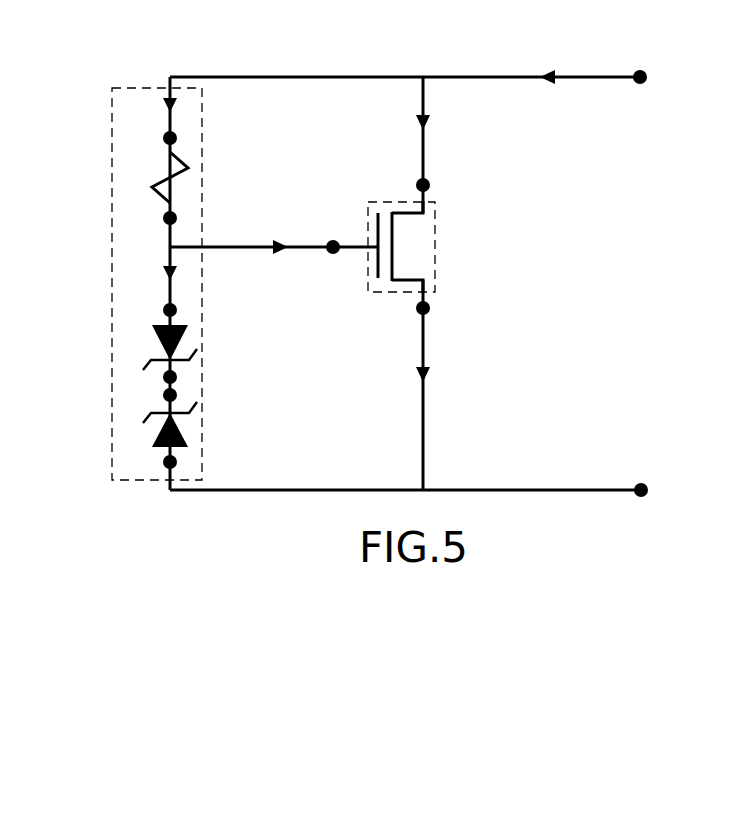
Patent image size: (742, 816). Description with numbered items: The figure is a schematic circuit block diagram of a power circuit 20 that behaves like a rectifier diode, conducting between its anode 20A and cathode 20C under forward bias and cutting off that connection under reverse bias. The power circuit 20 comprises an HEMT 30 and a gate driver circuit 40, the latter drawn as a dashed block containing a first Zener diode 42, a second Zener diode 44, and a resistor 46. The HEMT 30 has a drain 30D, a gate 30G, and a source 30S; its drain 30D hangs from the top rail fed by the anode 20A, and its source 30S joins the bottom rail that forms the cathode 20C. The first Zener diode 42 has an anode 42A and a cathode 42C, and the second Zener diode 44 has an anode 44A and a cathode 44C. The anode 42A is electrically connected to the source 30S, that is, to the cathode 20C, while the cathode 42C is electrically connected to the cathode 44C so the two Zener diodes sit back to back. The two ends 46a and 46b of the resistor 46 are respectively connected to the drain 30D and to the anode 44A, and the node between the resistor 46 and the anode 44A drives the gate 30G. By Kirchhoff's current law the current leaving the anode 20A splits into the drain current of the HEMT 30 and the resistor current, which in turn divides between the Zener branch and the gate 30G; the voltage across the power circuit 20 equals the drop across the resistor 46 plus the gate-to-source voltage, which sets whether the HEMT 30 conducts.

The power circuit 20 is at (434, 37).
The anode 20A is at (645, 71).
The cathode 20C is at (646, 484).
The HEMT 30 is at (436, 233).
The gate 30G is at (334, 239).
The drain 30D is at (430, 183).
The source 30S is at (430, 306).
The gate driver circuit 40 is at (112, 142).
The first Zener diode 42 is at (138, 434).
The anode 42A is at (177, 460).
The cathode 42C is at (177, 395).
The second Zener diode 44 is at (138, 342).
The anode 44A is at (177, 308).
The cathode 44C is at (177, 375).
The resistor 46 is at (156, 177).
The end of resistor 46a is at (177, 136).
The end of resistor 46b is at (177, 216).